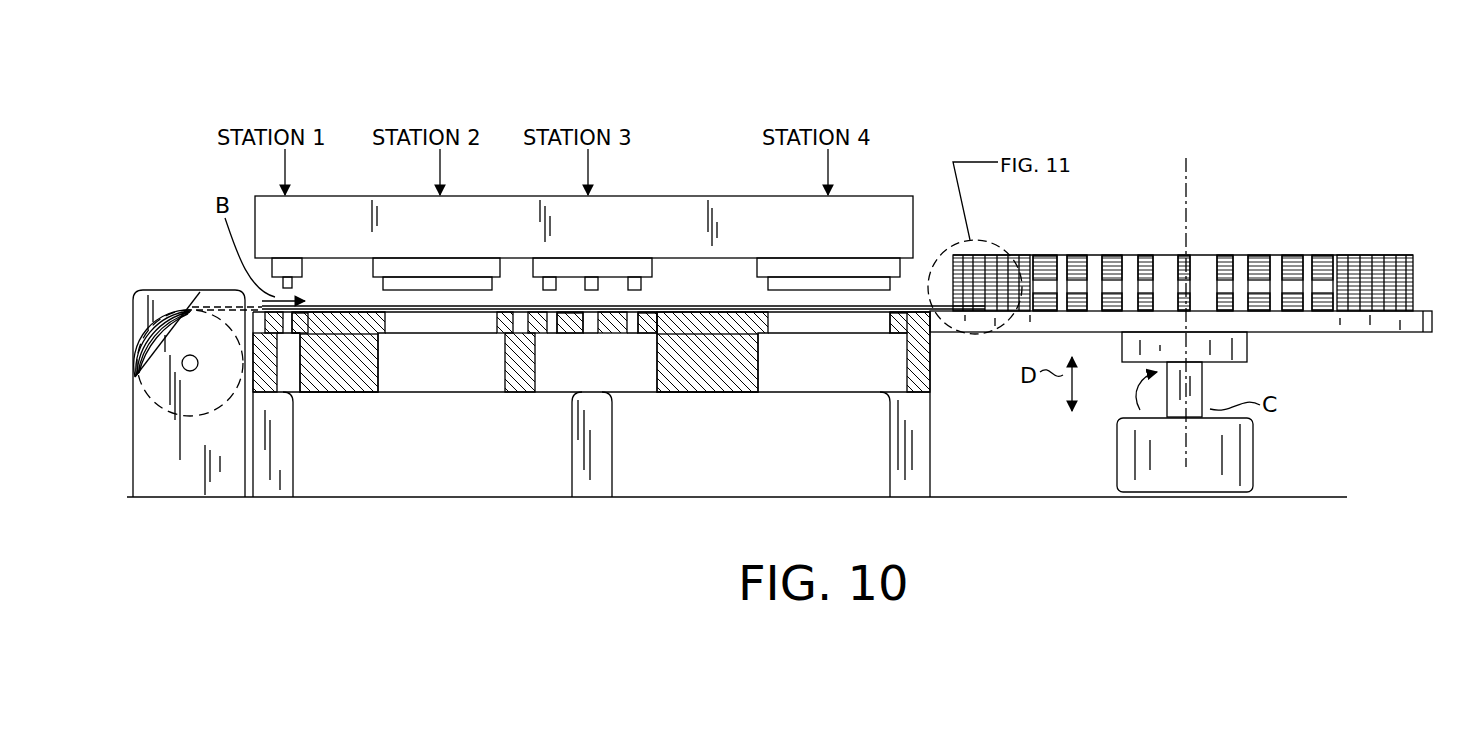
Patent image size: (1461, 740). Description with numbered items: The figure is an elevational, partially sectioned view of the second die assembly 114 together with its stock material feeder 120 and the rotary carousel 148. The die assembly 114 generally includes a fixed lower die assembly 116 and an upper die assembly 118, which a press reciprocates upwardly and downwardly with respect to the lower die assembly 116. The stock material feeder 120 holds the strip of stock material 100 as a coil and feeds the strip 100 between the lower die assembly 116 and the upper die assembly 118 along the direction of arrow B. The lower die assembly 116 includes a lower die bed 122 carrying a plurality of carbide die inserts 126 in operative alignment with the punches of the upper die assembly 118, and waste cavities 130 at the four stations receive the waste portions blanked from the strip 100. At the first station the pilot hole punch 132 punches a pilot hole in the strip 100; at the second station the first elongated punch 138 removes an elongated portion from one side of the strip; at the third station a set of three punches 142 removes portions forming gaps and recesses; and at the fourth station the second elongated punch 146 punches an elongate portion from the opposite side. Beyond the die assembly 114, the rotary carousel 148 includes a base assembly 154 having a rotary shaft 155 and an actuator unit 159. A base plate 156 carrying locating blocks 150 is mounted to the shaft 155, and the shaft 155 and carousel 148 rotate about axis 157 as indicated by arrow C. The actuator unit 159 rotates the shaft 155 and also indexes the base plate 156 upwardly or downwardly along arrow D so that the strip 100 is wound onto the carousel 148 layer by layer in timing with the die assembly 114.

The strip of stock material 100 is at (216, 311).
The second die assembly 114 is at (255, 80).
The lower die assembly 116 is at (937, 372).
The upper die assembly 118 is at (867, 194).
The stock material feeder 120 is at (167, 305).
The lower die bed 122 is at (921, 370).
The carbide die inserts 126 is at (297, 337).
The waste cavities 130 is at (377, 377).
The pilot hole punch 132 is at (287, 259).
The first elongated punch 138 is at (456, 260).
The set of three punches 142 is at (601, 260).
The second elongated punch 146 is at (836, 260).
The rotary carousel 148 is at (1430, 246).
The locating blocks 150 is at (1403, 248).
The base assembly 154 is at (1268, 412).
The rotary shaft 155 is at (1202, 386).
The base plate 156 is at (1407, 331).
The axis 157 is at (1188, 185).
The actuator unit 159 is at (1250, 445).